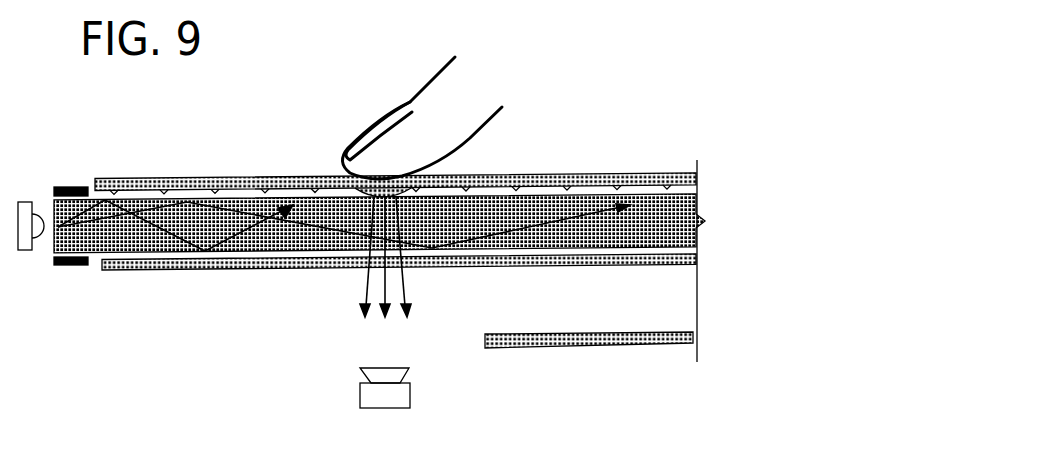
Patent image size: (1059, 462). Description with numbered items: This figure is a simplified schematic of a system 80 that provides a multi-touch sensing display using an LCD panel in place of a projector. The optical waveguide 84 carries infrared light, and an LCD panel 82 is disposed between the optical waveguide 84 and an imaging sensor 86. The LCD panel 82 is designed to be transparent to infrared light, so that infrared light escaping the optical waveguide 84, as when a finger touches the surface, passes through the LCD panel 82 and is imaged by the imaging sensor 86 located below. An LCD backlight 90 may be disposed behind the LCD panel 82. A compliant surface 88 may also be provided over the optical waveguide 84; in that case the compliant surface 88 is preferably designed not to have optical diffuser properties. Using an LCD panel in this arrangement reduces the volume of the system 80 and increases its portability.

The system 80 is at (698, 47).
The LCD panel 82 is at (662, 259).
The optical waveguide 84 is at (658, 222).
The imaging sensor 86 is at (372, 395).
The compliant surface 88 is at (585, 178).
The LCD backlight 90 is at (667, 339).